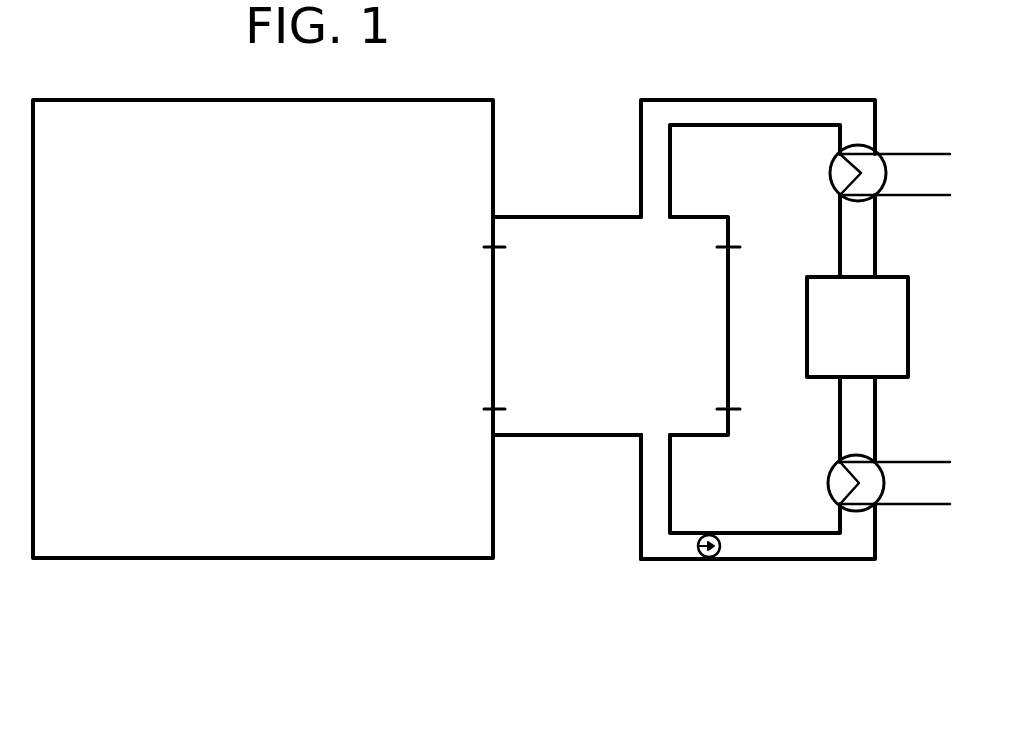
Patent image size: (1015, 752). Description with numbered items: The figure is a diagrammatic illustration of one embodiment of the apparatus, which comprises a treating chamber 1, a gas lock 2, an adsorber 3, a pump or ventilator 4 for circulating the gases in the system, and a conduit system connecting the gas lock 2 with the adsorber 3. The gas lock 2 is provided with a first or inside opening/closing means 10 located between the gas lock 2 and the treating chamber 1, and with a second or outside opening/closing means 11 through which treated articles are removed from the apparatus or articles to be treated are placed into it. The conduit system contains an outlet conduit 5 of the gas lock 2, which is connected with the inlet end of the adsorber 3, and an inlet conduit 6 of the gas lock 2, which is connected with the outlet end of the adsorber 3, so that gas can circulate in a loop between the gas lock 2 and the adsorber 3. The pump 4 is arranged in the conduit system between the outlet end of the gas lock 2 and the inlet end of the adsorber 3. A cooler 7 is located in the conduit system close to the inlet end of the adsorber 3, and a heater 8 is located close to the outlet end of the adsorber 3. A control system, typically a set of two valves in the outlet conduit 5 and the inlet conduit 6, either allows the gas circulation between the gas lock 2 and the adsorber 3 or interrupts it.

The treating chamber 1 is at (145, 510).
The first or inside opening/closing means 10 is at (490, 326).
The gas lock 2 is at (582, 353).
The inlet conduit 6 is at (787, 113).
The second or outside opening/closing means 11 is at (637, 485).
The outlet conduit 5 is at (653, 543).
The adsorber 3 is at (880, 340).
The heater 8 is at (872, 168).
The cooler 7 is at (867, 480).
The pump or ventilator 4 is at (720, 547).